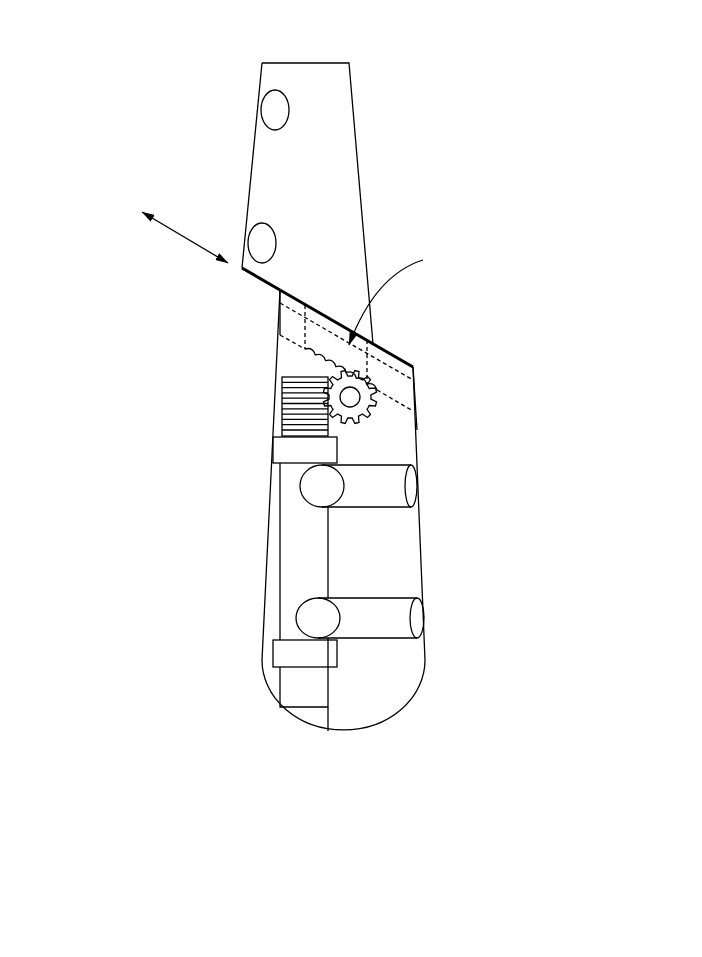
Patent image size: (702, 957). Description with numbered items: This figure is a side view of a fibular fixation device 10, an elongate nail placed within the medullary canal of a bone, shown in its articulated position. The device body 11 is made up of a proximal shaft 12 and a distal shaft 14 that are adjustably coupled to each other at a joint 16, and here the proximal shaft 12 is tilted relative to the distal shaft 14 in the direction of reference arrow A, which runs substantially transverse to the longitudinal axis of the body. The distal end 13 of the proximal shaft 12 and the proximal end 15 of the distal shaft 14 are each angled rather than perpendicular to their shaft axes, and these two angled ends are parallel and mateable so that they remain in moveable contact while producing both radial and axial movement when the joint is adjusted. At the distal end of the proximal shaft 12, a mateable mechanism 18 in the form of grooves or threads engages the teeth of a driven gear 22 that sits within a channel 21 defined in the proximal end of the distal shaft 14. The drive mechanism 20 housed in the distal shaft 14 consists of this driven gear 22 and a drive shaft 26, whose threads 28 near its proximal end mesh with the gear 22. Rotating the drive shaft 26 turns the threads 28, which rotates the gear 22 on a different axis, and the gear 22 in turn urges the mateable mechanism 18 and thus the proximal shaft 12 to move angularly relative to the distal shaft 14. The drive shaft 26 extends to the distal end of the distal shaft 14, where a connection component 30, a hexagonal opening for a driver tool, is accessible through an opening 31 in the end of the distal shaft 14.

The fibular fixation device 10 is at (444, 134).
The device body 11 is at (349, 544).
The proximal shaft 12 is at (223, 203).
The distal end of the proximal shaft 13 is at (254, 278).
The distal shaft 14 is at (289, 544).
The proximal end of the distal shaft 15 is at (386, 346).
The joint 16 is at (354, 283).
The mateable mechanism 18 is at (311, 305).
The drive mechanism 20 is at (320, 428).
The channel 21 is at (398, 295).
The driven gear 22 is at (352, 412).
The drive shaft 26 is at (292, 555).
The threads 28 is at (280, 402).
The connection component 30 is at (299, 730).
The opening 31 is at (325, 734).